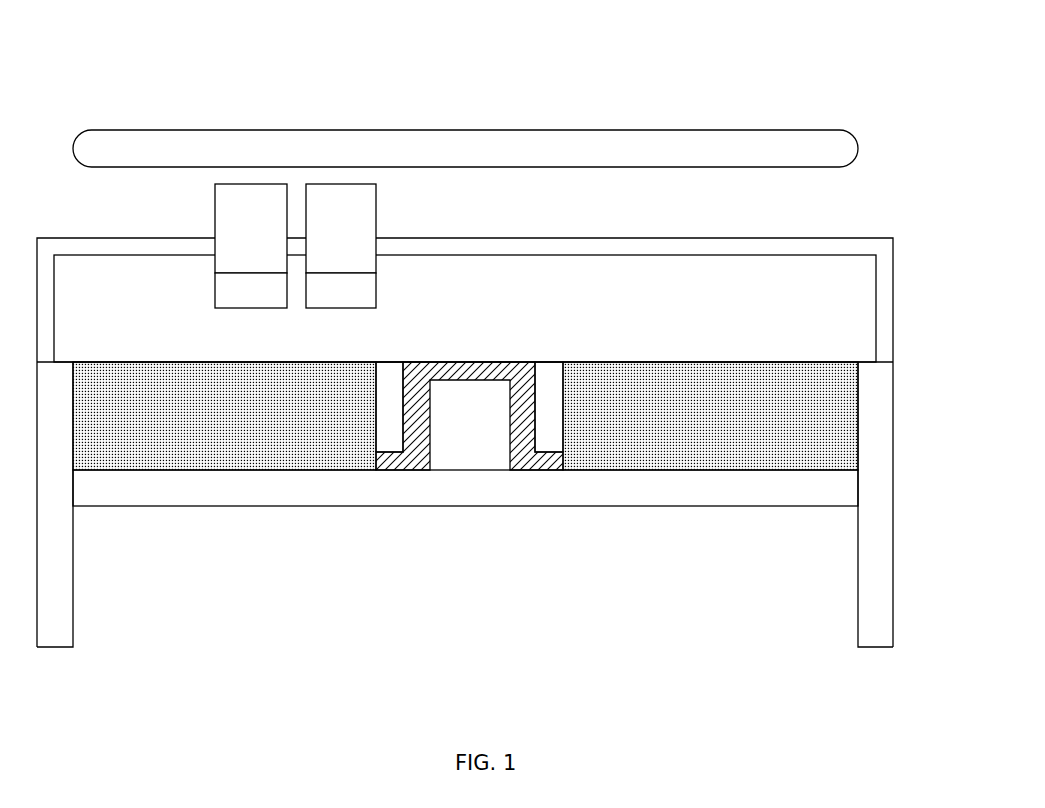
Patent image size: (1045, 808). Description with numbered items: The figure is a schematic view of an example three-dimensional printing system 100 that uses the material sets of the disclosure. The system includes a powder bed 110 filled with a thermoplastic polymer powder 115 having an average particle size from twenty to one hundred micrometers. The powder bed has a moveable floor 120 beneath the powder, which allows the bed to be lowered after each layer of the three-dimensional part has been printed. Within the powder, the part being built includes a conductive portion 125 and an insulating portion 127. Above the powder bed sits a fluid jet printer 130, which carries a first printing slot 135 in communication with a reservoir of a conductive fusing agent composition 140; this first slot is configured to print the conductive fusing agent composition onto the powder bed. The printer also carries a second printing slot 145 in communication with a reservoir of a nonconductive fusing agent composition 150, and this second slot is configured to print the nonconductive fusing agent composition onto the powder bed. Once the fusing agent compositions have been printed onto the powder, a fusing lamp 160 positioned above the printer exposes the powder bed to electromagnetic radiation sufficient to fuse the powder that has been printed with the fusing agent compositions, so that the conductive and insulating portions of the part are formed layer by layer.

The 3-dimensional printing system 100 is at (141, 66).
The powder bed 110 is at (808, 542).
The thermoplastic polymer powder 115 is at (723, 362).
The moveable floor 120 is at (580, 506).
The conductive portion 125 is at (492, 362).
The insulating portion 127 is at (545, 362).
The fluid jet printer 130 is at (867, 238).
The first printing slot 135 is at (215, 292).
The conductive fusing agent composition 140 is at (215, 212).
The second printing slot 145 is at (376, 302).
The nonconductive fusing agent composition 150 is at (376, 210).
The fusing lamp 160 is at (563, 130).